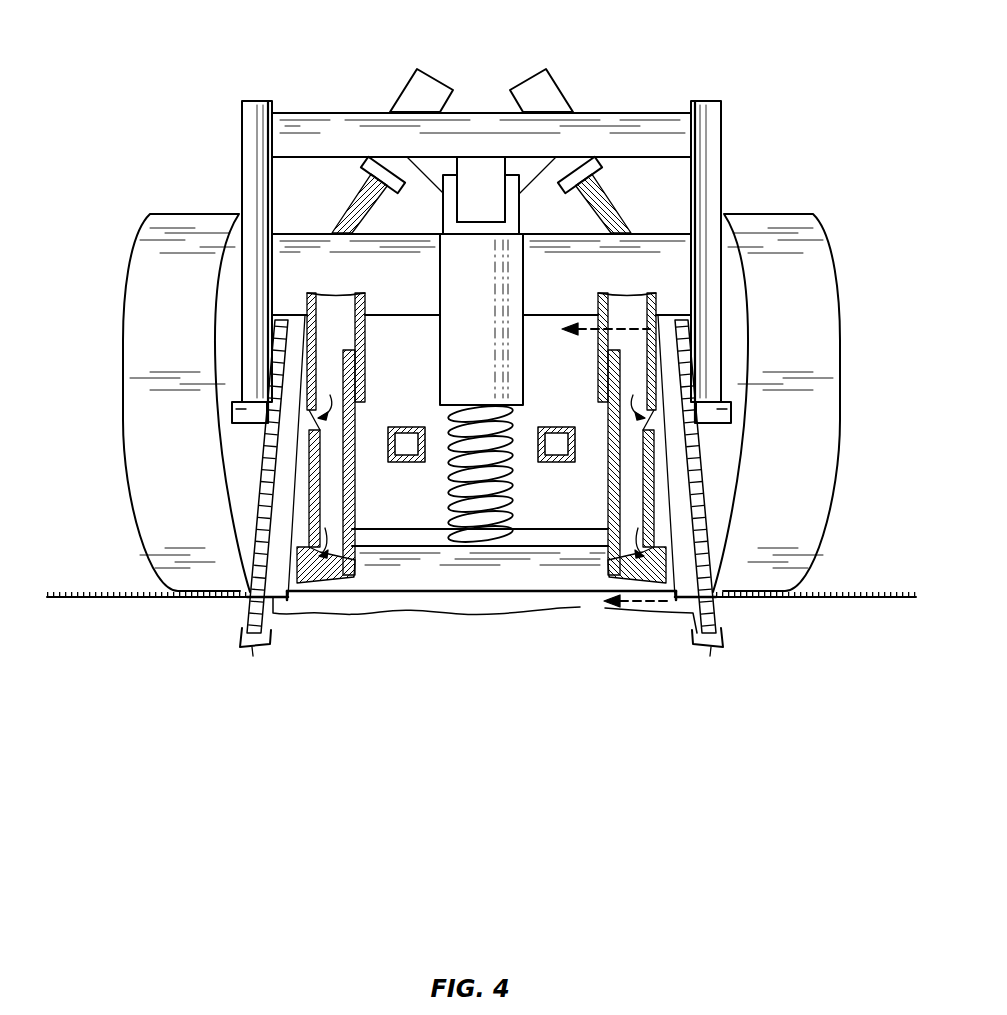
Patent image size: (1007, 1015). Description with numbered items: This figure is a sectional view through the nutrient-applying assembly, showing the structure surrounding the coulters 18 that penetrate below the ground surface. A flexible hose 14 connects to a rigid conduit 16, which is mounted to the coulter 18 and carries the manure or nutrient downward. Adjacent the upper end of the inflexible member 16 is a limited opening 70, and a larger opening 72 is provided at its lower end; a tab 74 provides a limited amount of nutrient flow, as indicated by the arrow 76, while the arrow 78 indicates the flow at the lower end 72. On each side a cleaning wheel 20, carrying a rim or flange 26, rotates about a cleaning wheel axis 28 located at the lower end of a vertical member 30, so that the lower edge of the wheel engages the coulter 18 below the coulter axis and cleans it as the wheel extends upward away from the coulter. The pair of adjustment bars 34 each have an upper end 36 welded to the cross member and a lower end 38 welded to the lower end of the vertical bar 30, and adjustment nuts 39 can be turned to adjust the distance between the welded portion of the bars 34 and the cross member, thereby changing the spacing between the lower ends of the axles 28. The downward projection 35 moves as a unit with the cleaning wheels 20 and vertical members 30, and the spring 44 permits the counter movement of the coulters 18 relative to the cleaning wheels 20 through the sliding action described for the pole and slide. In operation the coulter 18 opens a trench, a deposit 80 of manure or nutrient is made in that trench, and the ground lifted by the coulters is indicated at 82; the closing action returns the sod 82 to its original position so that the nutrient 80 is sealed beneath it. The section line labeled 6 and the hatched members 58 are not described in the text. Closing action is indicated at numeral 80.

The section line 6- 6 is at (606, 468).
The flexible hose 14 is at (366, 333).
The rigid conduit 16 is at (365, 470).
The coulter 18 is at (253, 517).
The cleaning wheel 20 is at (116, 321).
The rim or flange 26 is at (178, 213).
The cleaning wheel axis 28 is at (232, 415).
The vertical member 30 is at (246, 165).
The adjustment bar 34 is at (420, 68).
The downward projection 35 is at (467, 205).
The upper end 36 is at (393, 112).
The lower end 38 is at (265, 318).
The adjustment nut 39 is at (358, 168).
The spring 44 is at (487, 515).
The bar 58 is at (410, 427).
The limited opening 70 is at (305, 420).
The larger opening 72 is at (247, 594).
The tab 74 is at (352, 483).
The arrow 76 is at (324, 416).
The arrow 78 is at (352, 567).
The deposit 80 is at (258, 652).
The sod 82 is at (283, 628).